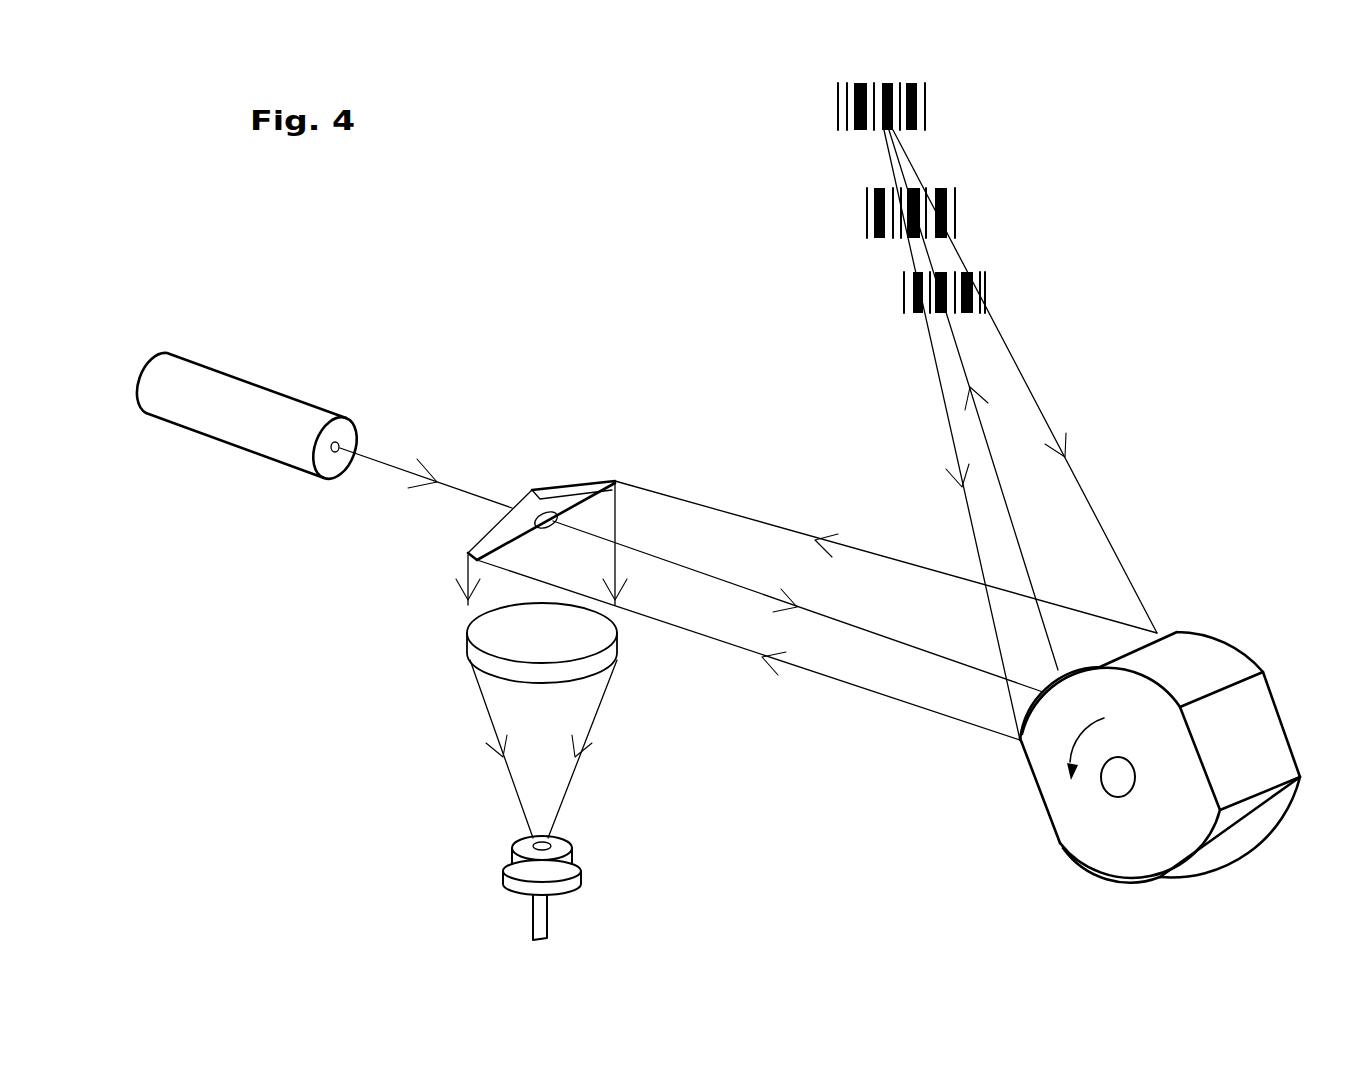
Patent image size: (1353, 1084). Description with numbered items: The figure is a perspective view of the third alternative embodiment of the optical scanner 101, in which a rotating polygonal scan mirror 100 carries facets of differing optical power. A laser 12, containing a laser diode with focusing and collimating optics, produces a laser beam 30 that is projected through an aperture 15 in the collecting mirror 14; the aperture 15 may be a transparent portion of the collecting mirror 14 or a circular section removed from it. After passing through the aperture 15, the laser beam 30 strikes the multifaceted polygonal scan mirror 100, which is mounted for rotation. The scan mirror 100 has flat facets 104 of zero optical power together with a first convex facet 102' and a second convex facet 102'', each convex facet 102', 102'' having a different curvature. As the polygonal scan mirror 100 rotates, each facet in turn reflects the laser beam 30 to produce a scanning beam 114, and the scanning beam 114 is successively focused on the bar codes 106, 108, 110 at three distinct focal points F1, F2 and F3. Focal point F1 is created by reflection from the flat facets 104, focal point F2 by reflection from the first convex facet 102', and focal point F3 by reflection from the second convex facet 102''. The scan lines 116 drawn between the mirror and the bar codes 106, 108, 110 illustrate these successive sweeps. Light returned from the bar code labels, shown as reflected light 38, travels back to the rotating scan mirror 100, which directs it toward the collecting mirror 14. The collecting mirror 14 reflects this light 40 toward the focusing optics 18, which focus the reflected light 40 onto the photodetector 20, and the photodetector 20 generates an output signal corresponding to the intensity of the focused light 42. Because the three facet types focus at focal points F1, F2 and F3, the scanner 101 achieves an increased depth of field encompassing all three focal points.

The laser 12 is at (291, 396).
The collecting mirror 14 is at (568, 484).
The aperture 15 is at (550, 528).
The focusing optics 18 is at (467, 640).
The photodetector 20 is at (573, 853).
The laser beam 30 is at (392, 455).
The reflected light 38 is at (777, 528).
The reflected light 40 is at (618, 525).
The focused light 42 is at (487, 717).
The polygonal scan mirror 100 is at (1040, 819).
The scanner 101 is at (601, 285).
The first convex facet 102' is at (1141, 765).
The second convex facet 102'' is at (1102, 821).
The flat facets 104 is at (1268, 728).
The bar code 106 is at (984, 288).
The bar code 108 is at (956, 213).
The bar code 110 is at (928, 104).
The scanning beam 114 is at (1013, 517).
The scan line 116 is at (970, 540).
The focal point F1 is at (897, 292).
The focal point F2 is at (858, 210).
The focal point F3 is at (832, 103).